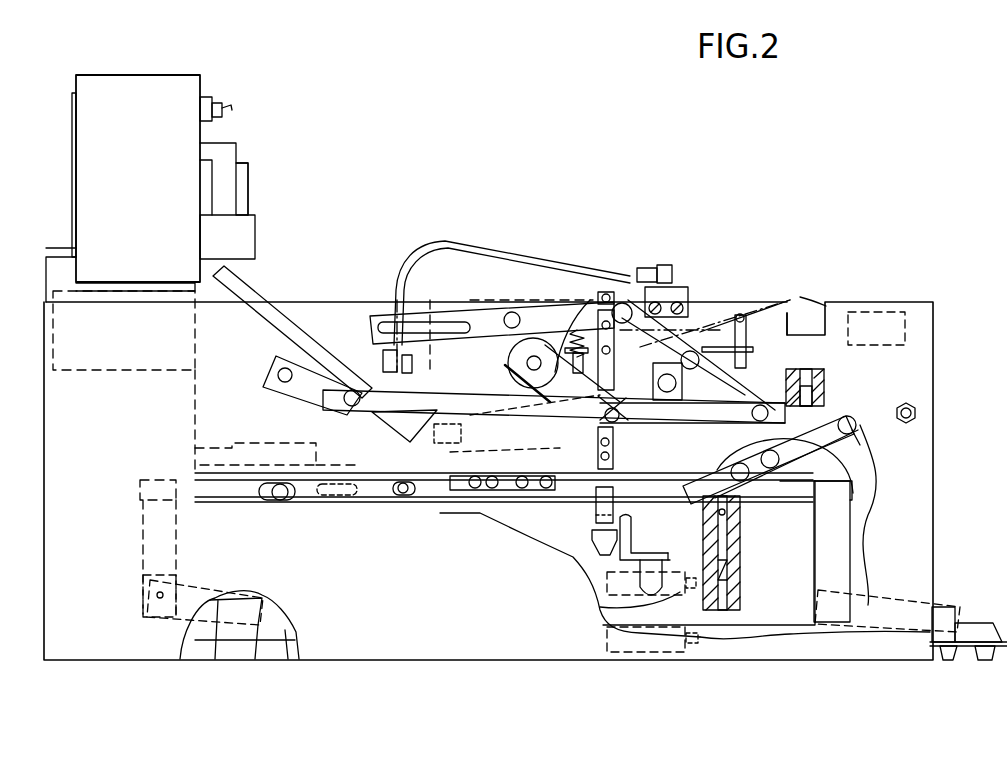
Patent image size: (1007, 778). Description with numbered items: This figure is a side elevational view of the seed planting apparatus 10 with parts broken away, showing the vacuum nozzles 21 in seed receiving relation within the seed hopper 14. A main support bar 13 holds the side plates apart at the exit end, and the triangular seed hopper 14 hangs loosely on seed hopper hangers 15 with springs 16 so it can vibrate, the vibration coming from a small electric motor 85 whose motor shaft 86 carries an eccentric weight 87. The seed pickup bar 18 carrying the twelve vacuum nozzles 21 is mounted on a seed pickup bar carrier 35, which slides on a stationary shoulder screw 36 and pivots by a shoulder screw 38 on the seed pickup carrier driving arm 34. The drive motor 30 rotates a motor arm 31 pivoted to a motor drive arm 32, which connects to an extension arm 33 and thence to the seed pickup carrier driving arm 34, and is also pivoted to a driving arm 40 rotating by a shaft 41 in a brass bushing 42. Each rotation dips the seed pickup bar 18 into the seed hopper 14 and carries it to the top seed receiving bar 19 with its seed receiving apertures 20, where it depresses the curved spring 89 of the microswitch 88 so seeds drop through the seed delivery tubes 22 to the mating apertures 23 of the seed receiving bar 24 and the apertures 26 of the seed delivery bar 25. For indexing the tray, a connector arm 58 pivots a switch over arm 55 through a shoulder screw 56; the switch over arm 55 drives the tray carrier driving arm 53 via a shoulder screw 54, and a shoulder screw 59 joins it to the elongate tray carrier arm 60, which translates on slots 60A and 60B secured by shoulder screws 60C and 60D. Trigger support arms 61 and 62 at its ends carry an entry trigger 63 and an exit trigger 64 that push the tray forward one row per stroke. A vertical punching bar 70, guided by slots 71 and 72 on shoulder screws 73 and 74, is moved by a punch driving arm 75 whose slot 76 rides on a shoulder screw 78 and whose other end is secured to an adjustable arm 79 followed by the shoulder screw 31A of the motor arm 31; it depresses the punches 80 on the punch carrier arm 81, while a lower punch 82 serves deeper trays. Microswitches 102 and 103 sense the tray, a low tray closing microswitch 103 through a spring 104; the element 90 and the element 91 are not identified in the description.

The seed planting apparatus 10 is at (902, 272).
The main support bar 13 is at (918, 413).
The seed hopper 14 is at (712, 335).
The seed hopper hangers 15 is at (744, 330).
The springs 16 is at (770, 330).
The seed pickup bar 18 is at (672, 280).
The top seed receiving bar 19 is at (800, 324).
The seed receiving apertures 20 is at (820, 372).
The vacuum nozzles 21 is at (690, 322).
The seed delivery tubes 22 is at (776, 464).
The mating aperture 23 is at (740, 522).
The seed receiving bar 24 is at (738, 505).
The seed delivery bar 25 is at (740, 546).
The apertures 26 is at (738, 568).
The drive motor 30 is at (208, 386).
The motor arm 31 is at (303, 387).
The shoulder screw 31A is at (335, 410).
The motor drive arm 32 is at (535, 440).
The extension arm 33 is at (745, 425).
The seed pickup carrier driving arm 34 is at (798, 372).
The seed pickup bar carrier 35 is at (375, 330).
The stationary shoulder screw 36 is at (512, 312).
The shoulder screw 38 is at (620, 302).
The driving arm 40 is at (510, 352).
The shaft 41 is at (527, 364).
The brass bushing 42 is at (516, 384).
The tray carrier driving arm 53 is at (302, 500).
The shoulder screw 54 is at (866, 480).
The switch over arm 55 is at (830, 440).
The shoulder screw 56 is at (856, 428).
The connector arm 58 is at (852, 420).
The shoulder screw 59 is at (276, 500).
The tray carrier arm 60 is at (140, 482).
The slot 60A is at (392, 425).
The slot 60B is at (648, 500).
The shoulder screw 60C is at (436, 468).
The shoulder screw 60D is at (663, 548).
The trigger support arm 61 is at (335, 503).
The trigger support arm 62 is at (838, 535).
The entry trigger 63 is at (186, 615).
The exit trigger 64 is at (945, 610).
The punching bar 70 is at (596, 508).
The slot 71 is at (598, 305).
The slot 72 is at (592, 448).
The shoulder screw 73 is at (615, 362).
The shoulder screw 74 is at (615, 450).
The punch driving arm 75 is at (530, 418).
The slot 76 is at (600, 418).
The shoulder screw 78 is at (535, 330).
The adjustable arm 79 is at (280, 303).
The punches 80 is at (648, 580).
The punch carrier arm 81 is at (590, 562).
The punch 82 is at (592, 545).
The electric motor 85 is at (667, 400).
The motor shaft 86 is at (699, 363).
The eccentric weight 87 is at (618, 420).
The microswitch 88 is at (885, 339).
The curved spring 89 is at (812, 304).
The motor 90 is at (88, 127).
The tube 91 is at (445, 248).
The microswitch 102 is at (603, 611).
The microswitch 103 is at (607, 643).
The spring 104 is at (698, 645).